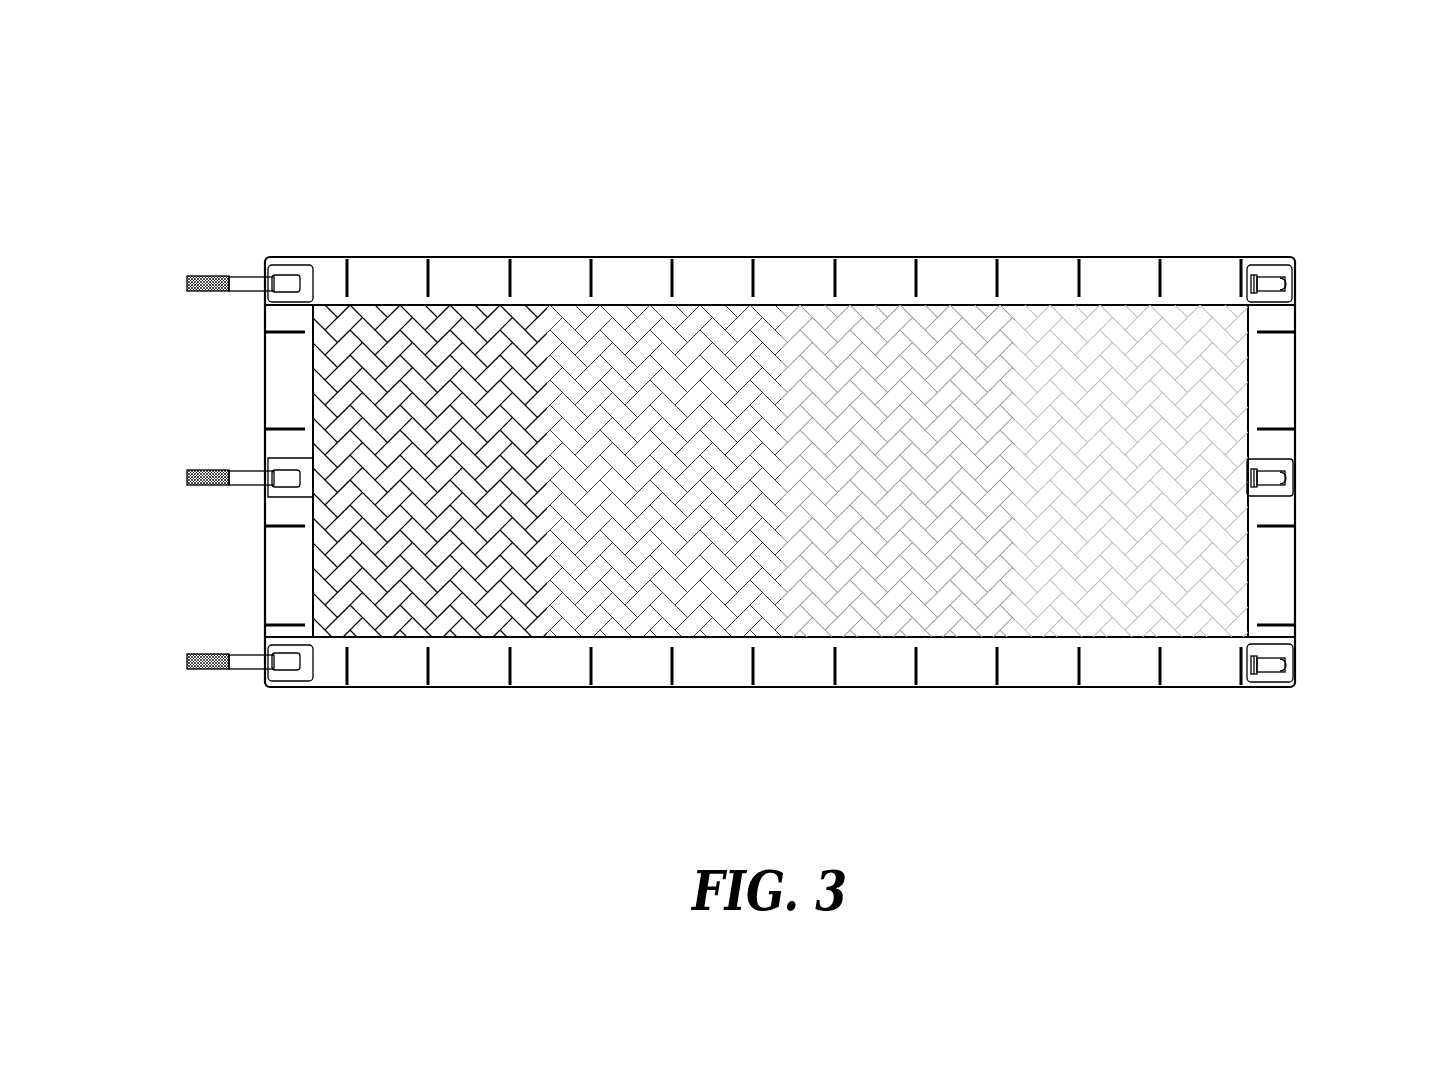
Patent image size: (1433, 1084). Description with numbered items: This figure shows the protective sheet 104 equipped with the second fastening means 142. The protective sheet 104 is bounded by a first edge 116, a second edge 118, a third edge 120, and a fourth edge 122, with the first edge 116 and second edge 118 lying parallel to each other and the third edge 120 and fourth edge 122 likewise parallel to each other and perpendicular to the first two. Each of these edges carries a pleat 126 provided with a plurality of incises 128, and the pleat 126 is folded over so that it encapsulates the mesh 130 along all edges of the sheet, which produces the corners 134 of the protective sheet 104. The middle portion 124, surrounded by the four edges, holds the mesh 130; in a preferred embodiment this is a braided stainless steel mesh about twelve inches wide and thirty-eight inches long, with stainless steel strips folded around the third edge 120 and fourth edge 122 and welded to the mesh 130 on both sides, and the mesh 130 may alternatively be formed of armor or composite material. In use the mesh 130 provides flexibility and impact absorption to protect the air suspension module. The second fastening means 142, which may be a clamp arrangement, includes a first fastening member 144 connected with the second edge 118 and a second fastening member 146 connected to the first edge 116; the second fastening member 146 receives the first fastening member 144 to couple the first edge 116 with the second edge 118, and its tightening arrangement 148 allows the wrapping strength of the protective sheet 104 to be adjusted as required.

The protective sheet 104 is at (298, 124).
The first edge 116 is at (1312, 356).
The second edge 118 is at (251, 376).
The third edge 120 is at (708, 699).
The fourth edge 122 is at (689, 236).
The middle portion 124 is at (765, 447).
The pleat 126 is at (385, 284).
The plurality of incises 128 is at (835, 256).
The mesh 130 is at (960, 614).
The corners 134 is at (266, 256).
The second fastening means 142 is at (243, 250).
The first fastening member 144 is at (248, 285).
The second fastening member 146 is at (1285, 270).
The tightening arrangement 148 is at (1256, 287).